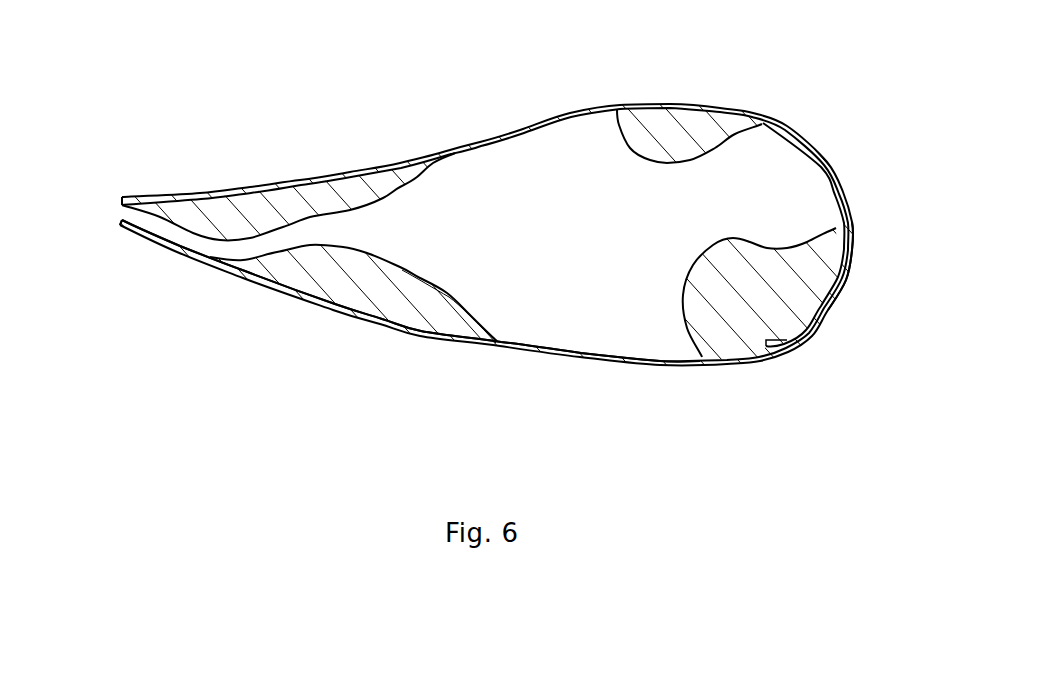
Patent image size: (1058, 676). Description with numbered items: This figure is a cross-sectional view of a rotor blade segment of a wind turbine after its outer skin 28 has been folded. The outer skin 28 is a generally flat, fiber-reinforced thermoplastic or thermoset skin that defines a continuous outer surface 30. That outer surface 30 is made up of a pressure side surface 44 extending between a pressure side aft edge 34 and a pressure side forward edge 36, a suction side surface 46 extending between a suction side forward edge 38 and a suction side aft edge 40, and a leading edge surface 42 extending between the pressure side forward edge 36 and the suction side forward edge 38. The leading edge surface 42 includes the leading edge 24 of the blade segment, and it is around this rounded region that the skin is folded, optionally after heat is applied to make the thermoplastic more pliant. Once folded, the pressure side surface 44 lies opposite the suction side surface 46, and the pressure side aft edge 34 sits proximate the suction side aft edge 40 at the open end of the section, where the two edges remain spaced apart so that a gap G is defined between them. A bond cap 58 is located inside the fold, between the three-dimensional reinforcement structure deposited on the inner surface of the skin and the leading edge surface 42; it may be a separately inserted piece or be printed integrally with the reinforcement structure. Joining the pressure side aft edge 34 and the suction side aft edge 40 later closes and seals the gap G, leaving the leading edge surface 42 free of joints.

The leading edge 24 is at (852, 240).
The outer skin 28 is at (527, 357).
The outer surface 30 is at (523, 120).
The pressure side aft edge 34 is at (123, 196).
The pressure side forward edge 36 is at (733, 110).
The suction side forward edge 38 is at (740, 363).
The suction side aft edge 40 is at (120, 224).
The leading edge surface 42 is at (838, 310).
The pressure side surface 44 is at (392, 163).
The suction side surface 46 is at (417, 340).
The bond cap 58 is at (823, 157).
The gap G is at (118, 215).